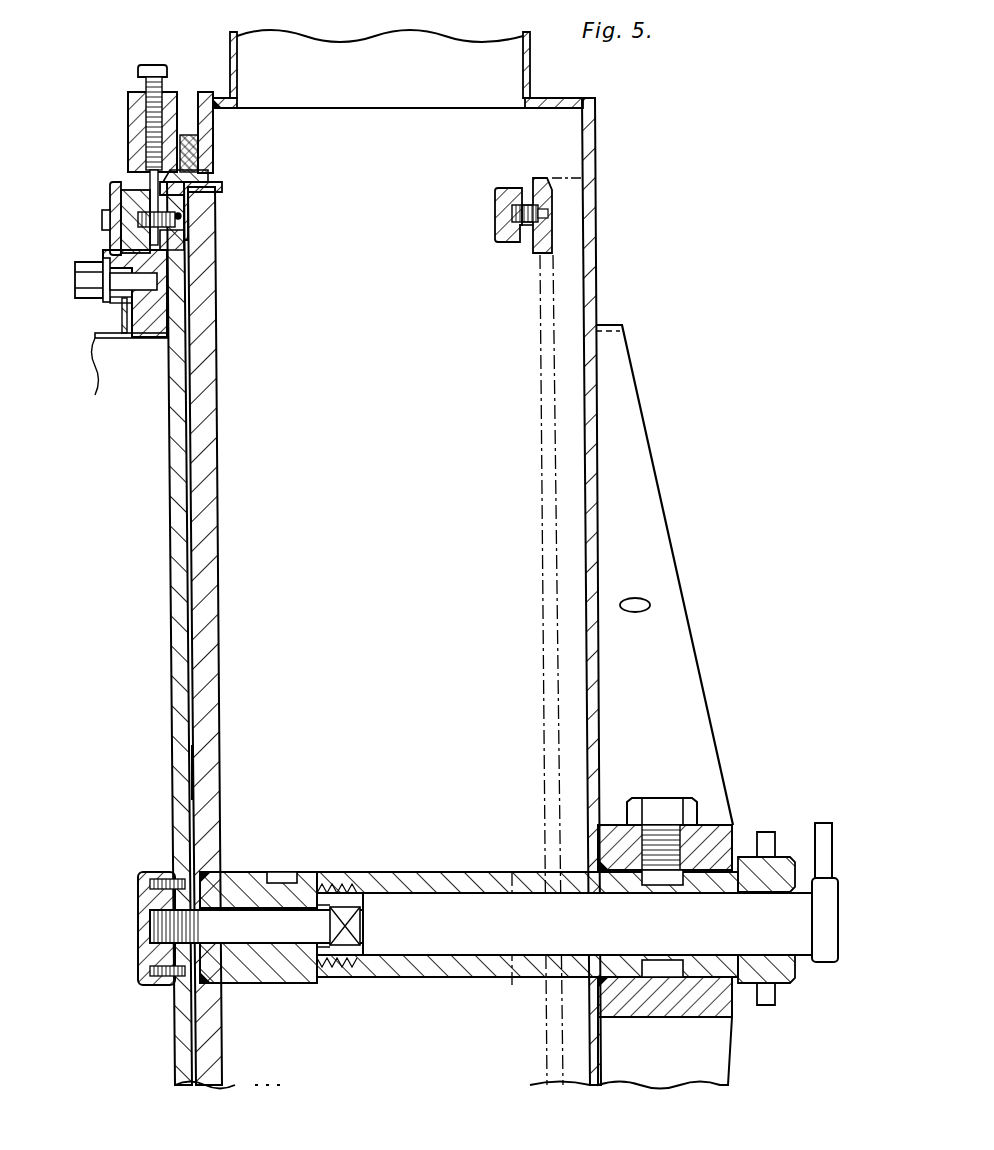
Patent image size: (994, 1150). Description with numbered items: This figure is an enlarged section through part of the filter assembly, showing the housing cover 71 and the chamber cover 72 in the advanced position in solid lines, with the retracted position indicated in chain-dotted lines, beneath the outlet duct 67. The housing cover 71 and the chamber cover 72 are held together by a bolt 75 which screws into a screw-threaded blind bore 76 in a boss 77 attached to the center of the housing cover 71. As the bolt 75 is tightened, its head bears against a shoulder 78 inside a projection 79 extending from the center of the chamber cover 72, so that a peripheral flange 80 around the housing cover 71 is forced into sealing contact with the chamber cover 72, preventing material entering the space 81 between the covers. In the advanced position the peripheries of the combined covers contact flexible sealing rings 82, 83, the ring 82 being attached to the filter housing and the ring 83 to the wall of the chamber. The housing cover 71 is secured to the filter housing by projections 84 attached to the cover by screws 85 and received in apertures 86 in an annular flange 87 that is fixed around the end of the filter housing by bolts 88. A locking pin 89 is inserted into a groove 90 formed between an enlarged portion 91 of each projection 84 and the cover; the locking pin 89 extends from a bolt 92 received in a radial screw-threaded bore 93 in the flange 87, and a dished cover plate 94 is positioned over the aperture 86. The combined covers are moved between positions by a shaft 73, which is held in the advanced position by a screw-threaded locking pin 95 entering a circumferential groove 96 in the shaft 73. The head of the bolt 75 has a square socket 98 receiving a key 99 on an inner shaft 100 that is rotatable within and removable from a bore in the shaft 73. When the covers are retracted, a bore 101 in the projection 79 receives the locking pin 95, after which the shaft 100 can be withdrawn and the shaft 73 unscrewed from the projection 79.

The outlet duct 67 is at (530, 70).
The housing cover 71 is at (175, 386).
The chamber cover 72 is at (210, 370).
The shaft 73 is at (448, 884).
The bolt 75 is at (252, 922).
The screw-threaded blind bore 76 is at (164, 978).
The boss 77 is at (148, 874).
The shoulder 78 is at (318, 886).
The projection 79 is at (300, 972).
The peripheral flange 80 is at (210, 190).
The space 81 is at (186, 774).
The flexible sealing ring 82 is at (198, 149).
The flexible sealing ring 83 is at (200, 172).
The projection 84 is at (135, 182).
The screw 85 is at (180, 220).
The aperture 86 is at (186, 258).
The annular flange 87 is at (158, 340).
The bolt 88 is at (110, 304).
The locking pin 89 is at (182, 214).
The groove 90 is at (532, 236).
The enlarged portion 91 is at (110, 216).
The bolt 92 is at (168, 90).
The radial screw-threaded bore 93 is at (187, 114).
The dished cover plate 94 is at (122, 242).
The screw-threaded locking pin 95 is at (660, 812).
The circumferential groove 96 is at (650, 985).
The socket 98 is at (340, 972).
The key 99 is at (352, 905).
The shaft 100 is at (458, 960).
The bore 101 is at (292, 876).